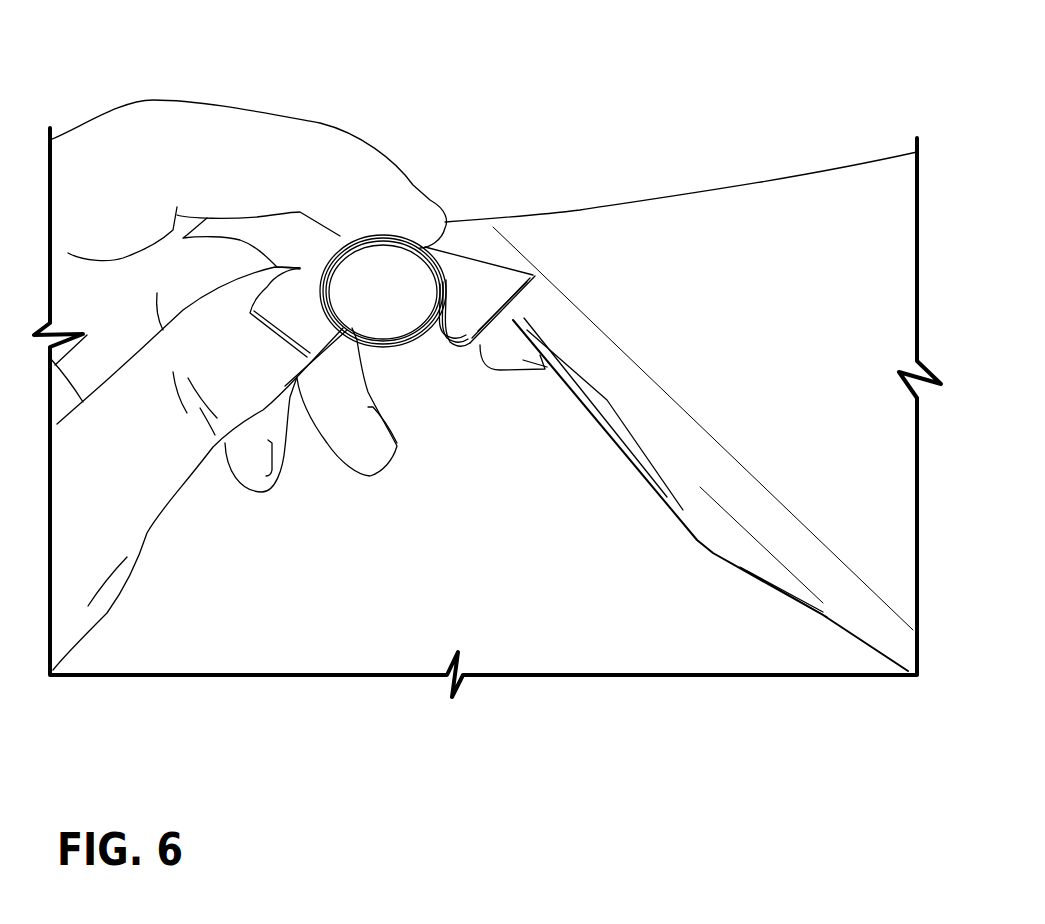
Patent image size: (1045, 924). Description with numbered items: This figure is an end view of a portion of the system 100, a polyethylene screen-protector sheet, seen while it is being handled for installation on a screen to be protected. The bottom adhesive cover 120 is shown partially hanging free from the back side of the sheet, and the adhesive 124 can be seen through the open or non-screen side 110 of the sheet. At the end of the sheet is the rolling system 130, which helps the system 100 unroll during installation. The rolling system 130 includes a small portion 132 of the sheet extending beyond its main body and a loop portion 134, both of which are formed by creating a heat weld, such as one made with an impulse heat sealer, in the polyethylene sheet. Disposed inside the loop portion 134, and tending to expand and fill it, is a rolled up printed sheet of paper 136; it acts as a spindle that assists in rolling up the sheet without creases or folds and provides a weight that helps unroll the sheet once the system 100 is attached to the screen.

The system 100 is at (727, 90).
The open or non-screen side 110 is at (832, 350).
The bottom adhesive cover 120 is at (502, 348).
The adhesive 124 is at (522, 310).
The rolling system 130 is at (320, 265).
The small portion 132 is at (482, 281).
The loop portion 134 is at (432, 342).
The rolled up printed sheet of paper 136 is at (360, 312).